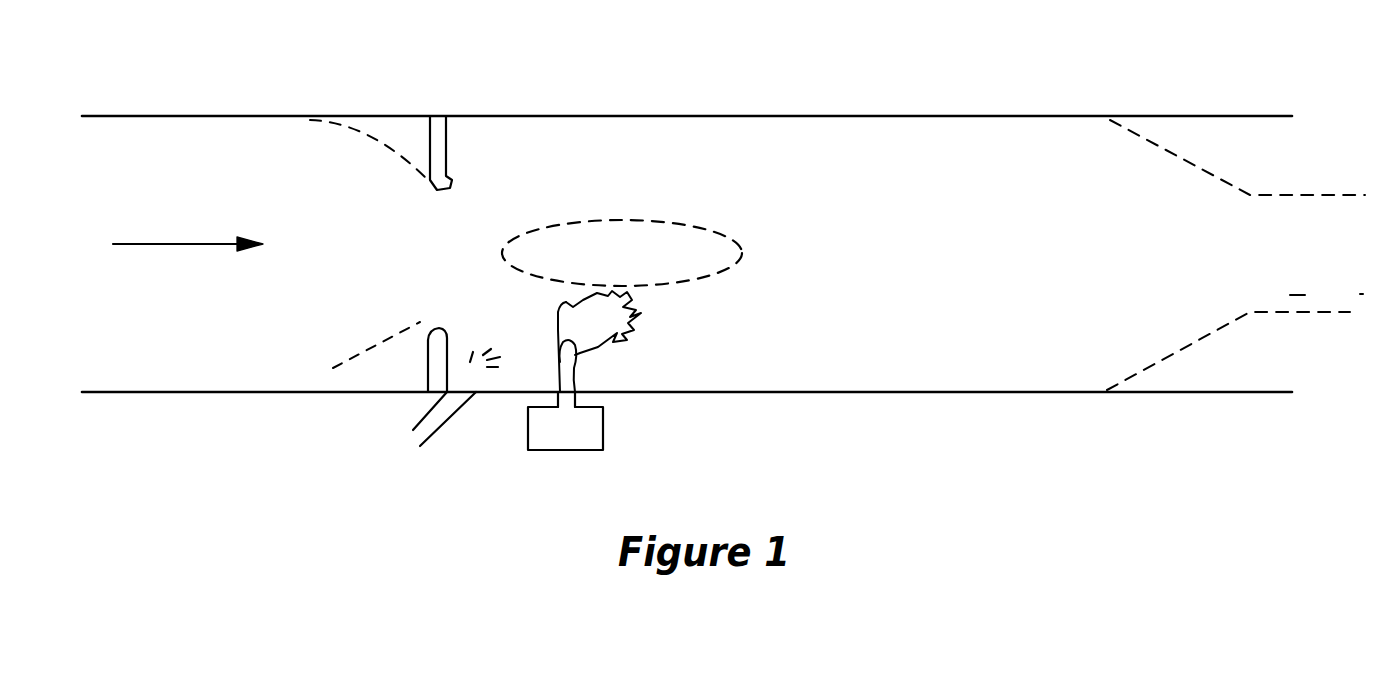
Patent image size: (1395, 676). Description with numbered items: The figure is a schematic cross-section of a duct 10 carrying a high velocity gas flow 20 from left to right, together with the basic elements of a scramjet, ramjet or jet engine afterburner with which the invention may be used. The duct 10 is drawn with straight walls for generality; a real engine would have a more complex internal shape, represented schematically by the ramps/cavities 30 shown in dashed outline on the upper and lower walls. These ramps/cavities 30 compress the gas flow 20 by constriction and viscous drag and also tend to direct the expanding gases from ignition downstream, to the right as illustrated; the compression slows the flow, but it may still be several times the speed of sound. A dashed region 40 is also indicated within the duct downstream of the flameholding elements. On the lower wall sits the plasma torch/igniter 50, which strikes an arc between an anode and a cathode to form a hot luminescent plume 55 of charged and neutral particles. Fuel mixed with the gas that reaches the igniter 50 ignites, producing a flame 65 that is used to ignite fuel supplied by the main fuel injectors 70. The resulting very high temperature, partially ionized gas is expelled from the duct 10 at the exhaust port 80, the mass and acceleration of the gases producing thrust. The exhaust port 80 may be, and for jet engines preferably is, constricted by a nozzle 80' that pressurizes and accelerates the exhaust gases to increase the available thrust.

The duct 10 is at (900, 117).
The high velocity gas flow 20 is at (160, 244).
The ramps/cavities 30 is at (386, 368).
The recirculation zone 40 is at (710, 228).
The plasma torch/igniter 50 is at (623, 410).
The luminescent plume 55 is at (577, 368).
The flame 65 is at (637, 312).
The main fuel injectors 70 is at (447, 142).
The exhaust port 80 is at (1237, 122).
The nozzle 80' is at (1235, 268).